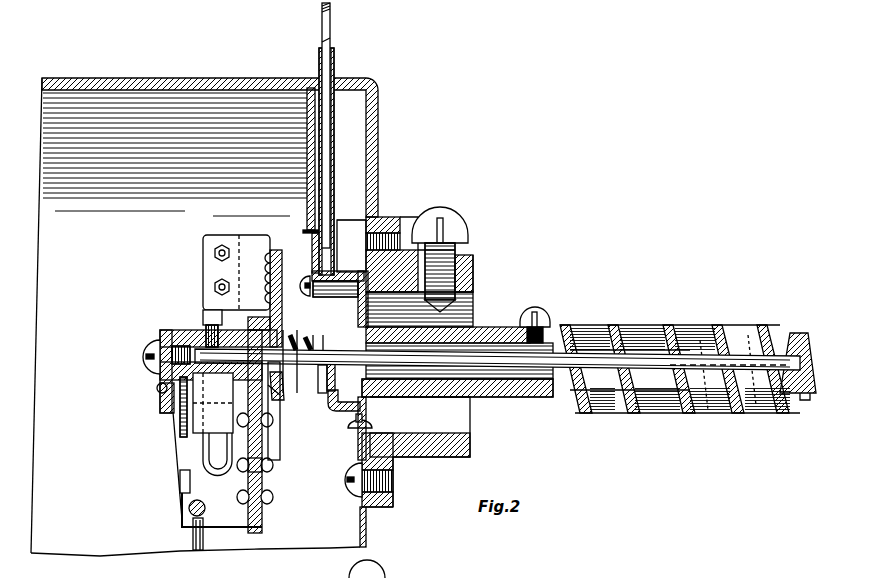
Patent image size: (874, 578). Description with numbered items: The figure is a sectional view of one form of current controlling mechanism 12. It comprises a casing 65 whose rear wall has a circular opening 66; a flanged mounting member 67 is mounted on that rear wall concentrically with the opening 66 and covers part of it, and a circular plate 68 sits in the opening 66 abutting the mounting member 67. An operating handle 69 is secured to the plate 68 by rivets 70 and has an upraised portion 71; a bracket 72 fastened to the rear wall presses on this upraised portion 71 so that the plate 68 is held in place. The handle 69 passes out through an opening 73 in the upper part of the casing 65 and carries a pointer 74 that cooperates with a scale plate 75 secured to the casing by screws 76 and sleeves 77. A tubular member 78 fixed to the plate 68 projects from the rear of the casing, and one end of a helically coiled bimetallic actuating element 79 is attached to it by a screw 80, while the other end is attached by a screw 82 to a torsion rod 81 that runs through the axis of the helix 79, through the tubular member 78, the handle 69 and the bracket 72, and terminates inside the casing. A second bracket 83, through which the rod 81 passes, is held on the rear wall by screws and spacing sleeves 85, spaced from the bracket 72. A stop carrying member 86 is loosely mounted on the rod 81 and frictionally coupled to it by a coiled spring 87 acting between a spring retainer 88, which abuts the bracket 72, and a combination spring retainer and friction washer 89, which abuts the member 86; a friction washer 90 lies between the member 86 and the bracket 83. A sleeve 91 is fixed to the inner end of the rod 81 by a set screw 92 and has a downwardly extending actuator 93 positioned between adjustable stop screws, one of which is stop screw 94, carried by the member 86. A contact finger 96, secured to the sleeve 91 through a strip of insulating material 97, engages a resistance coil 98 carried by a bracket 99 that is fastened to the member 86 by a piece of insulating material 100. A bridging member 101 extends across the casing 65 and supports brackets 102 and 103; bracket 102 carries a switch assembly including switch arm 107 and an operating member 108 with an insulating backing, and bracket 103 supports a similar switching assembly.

The current controlling mechanism 12 is at (503, 171).
The casing 65 is at (379, 165).
The circular opening 66 is at (360, 462).
The flanged mounting member 67 is at (470, 262).
The circular plate 68 is at (395, 407).
The operating handle 69 is at (332, 25).
The rivets 70 is at (386, 312).
The upraised portion 71 is at (360, 445).
The bracket 72 is at (337, 412).
The opening 73 is at (311, 85).
The pointer 74 is at (392, 577).
The scale plate 75 is at (335, 62).
The screws 76 is at (309, 278).
The sleeves 77 is at (335, 271).
The tubular member 78 is at (494, 328).
The helically coiled bimetallic actuating element 79 is at (624, 328).
The screw 80 is at (543, 312).
The torsion rod 81 is at (600, 398).
The screw 82 is at (795, 397).
The second bracket 83 is at (243, 330).
The spacing sleeves 85 is at (292, 333).
The stop carrying member 86 is at (264, 480).
The coiled spring 87 is at (309, 336).
The spring retainer 88 is at (323, 393).
The combination spring retainer and friction washer 89 is at (274, 400).
The friction washer 90 is at (248, 318).
The sleeve 91 is at (180, 338).
The set screw 92 is at (206, 310).
The actuator 93 is at (210, 435).
The adjustable stop screw 94 is at (168, 420).
The contact finger 96 is at (185, 490).
The strip of insulating material 97 is at (168, 410).
The resistance coil 98 is at (190, 513).
The bracket 99 is at (218, 527).
The piece of insulating material 100 is at (265, 518).
The bridging member 101 is at (281, 450).
The bracket 102 is at (262, 238).
The bracket 103 is at (197, 552).
The switch arm 107 is at (215, 445).
The operating member 108 is at (212, 457).